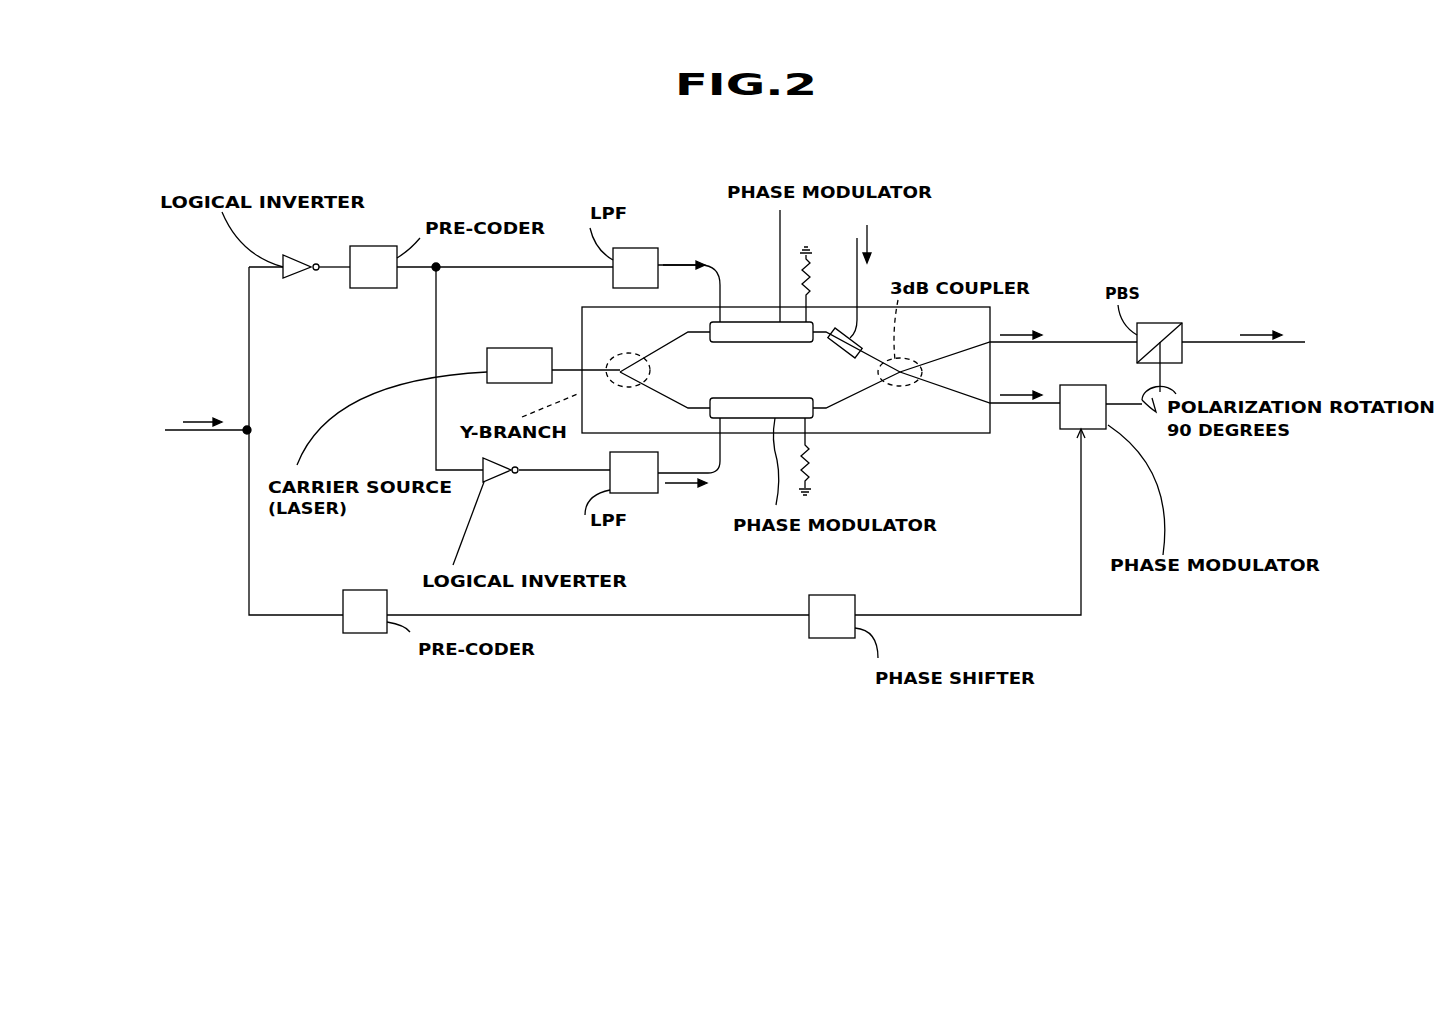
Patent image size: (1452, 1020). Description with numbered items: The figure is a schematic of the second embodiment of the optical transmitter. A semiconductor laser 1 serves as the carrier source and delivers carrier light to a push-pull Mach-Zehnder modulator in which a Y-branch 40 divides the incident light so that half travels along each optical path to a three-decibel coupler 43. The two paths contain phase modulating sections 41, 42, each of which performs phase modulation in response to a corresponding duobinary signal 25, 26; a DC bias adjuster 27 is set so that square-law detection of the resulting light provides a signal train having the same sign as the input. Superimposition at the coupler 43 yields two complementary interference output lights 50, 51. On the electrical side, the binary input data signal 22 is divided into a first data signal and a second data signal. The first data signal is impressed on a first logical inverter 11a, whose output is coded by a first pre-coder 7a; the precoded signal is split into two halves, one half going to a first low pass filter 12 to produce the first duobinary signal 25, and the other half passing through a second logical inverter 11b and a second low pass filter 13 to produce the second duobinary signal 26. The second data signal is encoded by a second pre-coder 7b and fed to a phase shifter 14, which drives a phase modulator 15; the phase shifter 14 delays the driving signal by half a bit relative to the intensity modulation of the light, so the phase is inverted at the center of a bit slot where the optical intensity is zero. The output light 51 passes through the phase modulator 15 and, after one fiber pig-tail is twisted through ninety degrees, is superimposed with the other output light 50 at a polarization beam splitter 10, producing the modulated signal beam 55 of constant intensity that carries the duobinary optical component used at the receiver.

The semiconductor laser 1 is at (507, 348).
The first pre-coder 7a is at (378, 258).
The second pre-coder 7b is at (370, 622).
The polarization beam splitter (PBS) 10 is at (1150, 328).
The first logical inverter 11a is at (297, 272).
The second logical inverter 11b is at (493, 478).
The first low pass filter (LPF) 12 is at (633, 262).
The second low pass filter (LPF) 13 is at (633, 473).
The phase shifter 14 is at (832, 627).
The phase modulator 15 is at (1103, 430).
The input data signal 22 is at (202, 413).
The first duobinary signal 25 is at (684, 257).
The second duobinary signal 26 is at (686, 492).
The DC bias adjuster 27 is at (877, 244).
The Y-branch 40 is at (610, 336).
The phase modulating section 41 is at (745, 320).
The phase modulating section 42 is at (749, 418).
The 3 dB coupler 43 is at (900, 386).
The interference output light 50 is at (1021, 326).
The interference output light 51 is at (1021, 386).
The modulated signal beam 55 is at (1261, 326).